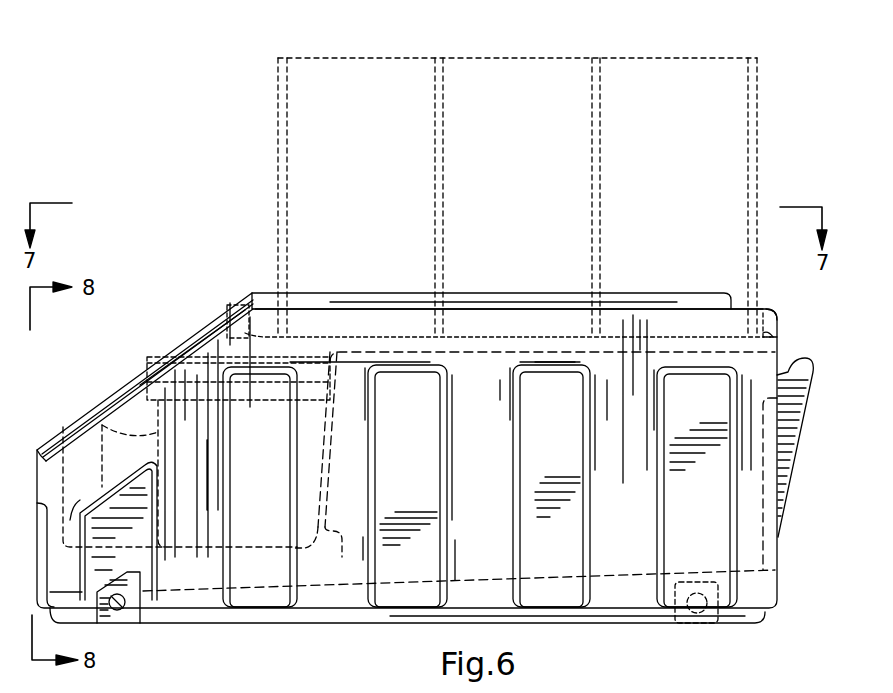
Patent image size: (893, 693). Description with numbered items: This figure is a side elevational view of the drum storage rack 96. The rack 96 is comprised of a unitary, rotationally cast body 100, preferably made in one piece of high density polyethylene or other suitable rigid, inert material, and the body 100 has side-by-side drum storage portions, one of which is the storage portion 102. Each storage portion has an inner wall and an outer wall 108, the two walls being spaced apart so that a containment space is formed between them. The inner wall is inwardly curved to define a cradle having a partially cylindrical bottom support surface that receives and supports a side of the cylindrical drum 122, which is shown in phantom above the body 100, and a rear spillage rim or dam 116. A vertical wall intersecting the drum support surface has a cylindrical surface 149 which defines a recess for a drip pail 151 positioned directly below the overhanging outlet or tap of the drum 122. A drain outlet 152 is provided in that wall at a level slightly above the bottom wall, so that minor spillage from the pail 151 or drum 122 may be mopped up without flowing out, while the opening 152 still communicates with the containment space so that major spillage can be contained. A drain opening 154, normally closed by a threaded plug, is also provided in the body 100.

The drum storage rack 96 is at (112, 380).
The body 100 is at (349, 283).
The drum storage portion 102 is at (168, 338).
The outer wall 108 is at (507, 300).
The rear spillage rim 116 is at (770, 308).
The cylindrical drum 122 is at (487, 73).
The cylindrical surface 149 is at (233, 338).
The drip pail 151 is at (102, 422).
The drain outlet 152 is at (326, 468).
The drain opening 154 is at (120, 611).